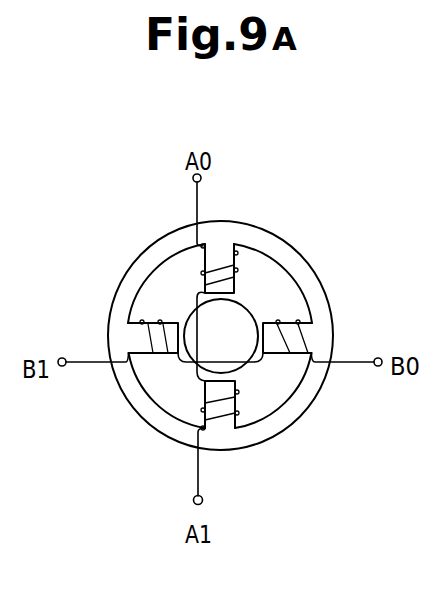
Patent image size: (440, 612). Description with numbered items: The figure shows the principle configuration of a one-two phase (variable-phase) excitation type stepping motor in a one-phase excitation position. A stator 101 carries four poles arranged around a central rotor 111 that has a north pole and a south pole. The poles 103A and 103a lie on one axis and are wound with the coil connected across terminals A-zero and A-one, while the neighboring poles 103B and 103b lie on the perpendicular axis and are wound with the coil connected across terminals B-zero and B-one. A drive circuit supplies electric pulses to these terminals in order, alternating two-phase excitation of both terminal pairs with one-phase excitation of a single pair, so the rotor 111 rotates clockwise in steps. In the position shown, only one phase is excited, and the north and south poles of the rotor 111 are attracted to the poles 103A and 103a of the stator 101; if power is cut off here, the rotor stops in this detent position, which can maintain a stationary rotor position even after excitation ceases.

The stator 101 is at (140, 268).
The pole 103A is at (227, 284).
The pole 103a is at (212, 392).
The pole 103b is at (148, 330).
The pole 103B is at (272, 345).
The rotor 111 is at (183, 367).